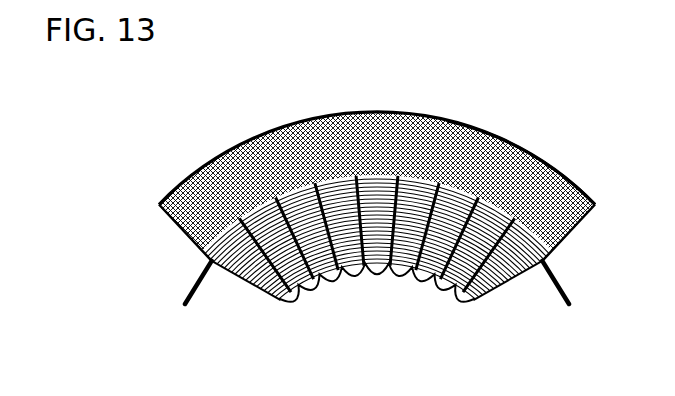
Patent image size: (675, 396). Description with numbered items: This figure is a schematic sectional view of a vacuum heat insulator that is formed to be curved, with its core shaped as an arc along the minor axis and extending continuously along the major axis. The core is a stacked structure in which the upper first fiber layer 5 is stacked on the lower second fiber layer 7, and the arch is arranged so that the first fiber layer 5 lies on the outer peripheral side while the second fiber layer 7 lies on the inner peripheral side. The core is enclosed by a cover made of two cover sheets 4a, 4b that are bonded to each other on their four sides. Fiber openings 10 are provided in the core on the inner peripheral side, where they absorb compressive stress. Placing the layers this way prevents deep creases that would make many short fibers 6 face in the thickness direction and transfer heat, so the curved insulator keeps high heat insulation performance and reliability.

The cover sheet 4a is at (503, 130).
The cover sheet 4b is at (437, 277).
The first fiber layer 5 is at (440, 111).
The short fibers 6 is at (267, 118).
The second fiber layer 7 is at (490, 287).
The fiber openings 10 is at (320, 270).